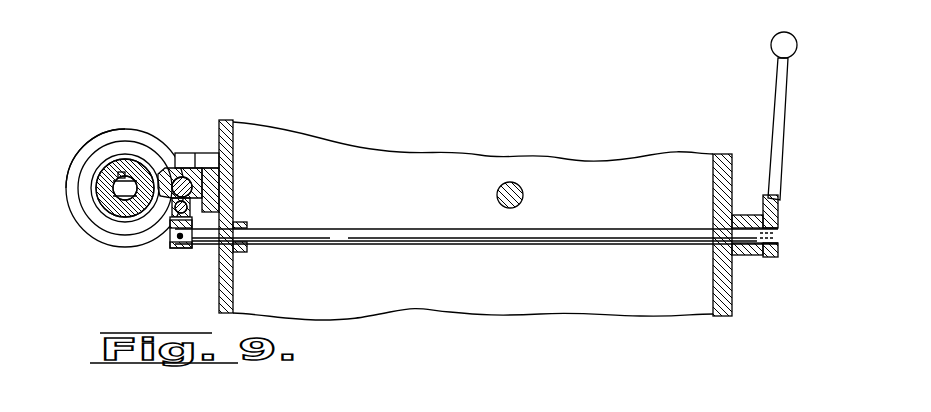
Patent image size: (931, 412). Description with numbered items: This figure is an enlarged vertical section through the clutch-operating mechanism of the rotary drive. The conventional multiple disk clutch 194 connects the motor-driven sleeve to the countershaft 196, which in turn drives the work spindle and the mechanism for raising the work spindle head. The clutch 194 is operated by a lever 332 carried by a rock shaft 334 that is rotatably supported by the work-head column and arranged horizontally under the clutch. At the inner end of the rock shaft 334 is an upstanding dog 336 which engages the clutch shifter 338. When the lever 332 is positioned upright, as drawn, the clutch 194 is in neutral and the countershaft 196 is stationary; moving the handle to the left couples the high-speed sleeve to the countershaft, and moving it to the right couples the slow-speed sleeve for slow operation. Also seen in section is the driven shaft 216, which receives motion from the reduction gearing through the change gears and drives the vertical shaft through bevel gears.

The multiple disk clutch 194 is at (92, 250).
The countershaft 196 is at (95, 199).
The clutch shifter 338 is at (142, 167).
The upstanding dog 336 is at (190, 220).
The rock shaft 334 is at (405, 242).
The driven shaft 216 is at (522, 191).
The lever 332 is at (778, 93).